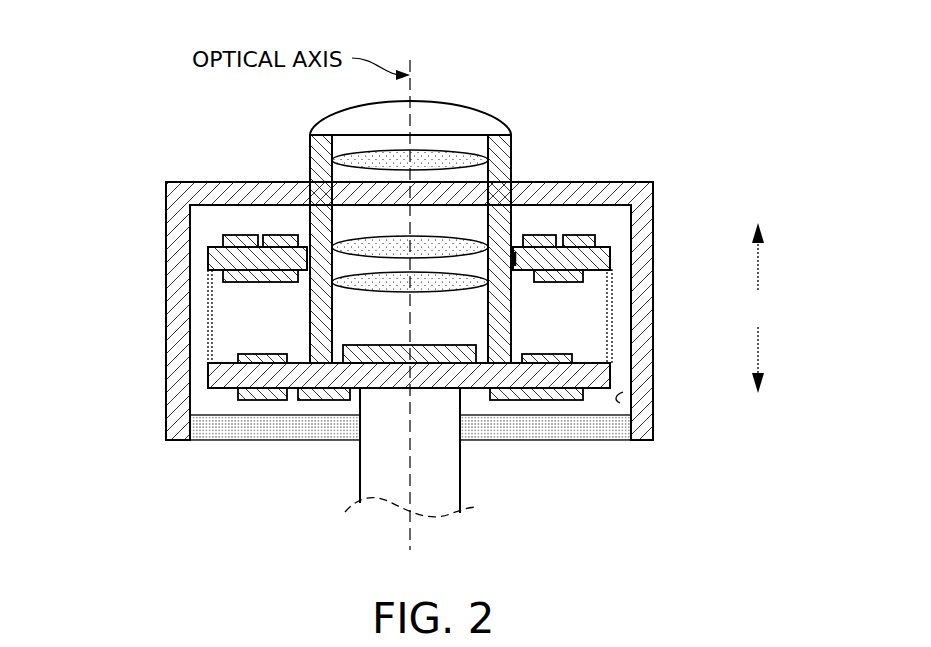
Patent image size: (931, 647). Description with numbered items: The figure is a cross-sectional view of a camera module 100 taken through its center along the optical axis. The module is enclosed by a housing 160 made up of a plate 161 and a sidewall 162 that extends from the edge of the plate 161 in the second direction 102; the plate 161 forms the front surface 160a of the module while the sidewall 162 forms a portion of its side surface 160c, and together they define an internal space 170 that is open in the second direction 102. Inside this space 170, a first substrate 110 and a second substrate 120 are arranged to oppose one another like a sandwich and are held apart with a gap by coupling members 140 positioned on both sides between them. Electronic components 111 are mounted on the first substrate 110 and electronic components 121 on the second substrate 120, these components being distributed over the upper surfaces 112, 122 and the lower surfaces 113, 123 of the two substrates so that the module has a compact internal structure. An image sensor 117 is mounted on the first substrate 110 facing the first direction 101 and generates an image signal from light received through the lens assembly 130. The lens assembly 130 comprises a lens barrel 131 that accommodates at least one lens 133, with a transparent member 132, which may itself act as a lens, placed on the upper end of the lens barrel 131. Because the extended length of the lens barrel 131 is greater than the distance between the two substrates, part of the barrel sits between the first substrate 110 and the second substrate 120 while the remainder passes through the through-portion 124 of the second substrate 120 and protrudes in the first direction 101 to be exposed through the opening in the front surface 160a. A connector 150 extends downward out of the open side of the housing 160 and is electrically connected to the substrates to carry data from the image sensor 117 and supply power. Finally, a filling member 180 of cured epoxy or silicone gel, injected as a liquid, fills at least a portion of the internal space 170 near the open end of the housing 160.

The camera module 100 is at (100, 482).
The first direction 101 is at (758, 268).
The second direction 102 is at (758, 350).
The first substrate 110 is at (255, 362).
The electronic components 111 is at (248, 392).
The upper surface 112 is at (238, 395).
The lower surface 113 is at (238, 357).
The image sensor 117 is at (445, 355).
The second substrate 120 is at (208, 260).
The electronic components 121 is at (214, 183).
The upper surface 122 is at (583, 276).
The lower surface 123 is at (598, 242).
The through-portion 124 is at (515, 258).
The lens assembly 130 is at (485, 92).
The lens barrel 131 is at (310, 165).
The transparent member 132 is at (437, 115).
The lens 133 is at (310, 137).
The coupling member 140 is at (210, 300).
The connector 150 is at (443, 515).
The housing 160 is at (578, 172).
The front surface 160a is at (236, 235).
The side surface 160c is at (165, 418).
The plate 161 is at (183, 190).
The sidewall 162 is at (170, 228).
The space 170 is at (622, 398).
The filling member 180 is at (312, 430).